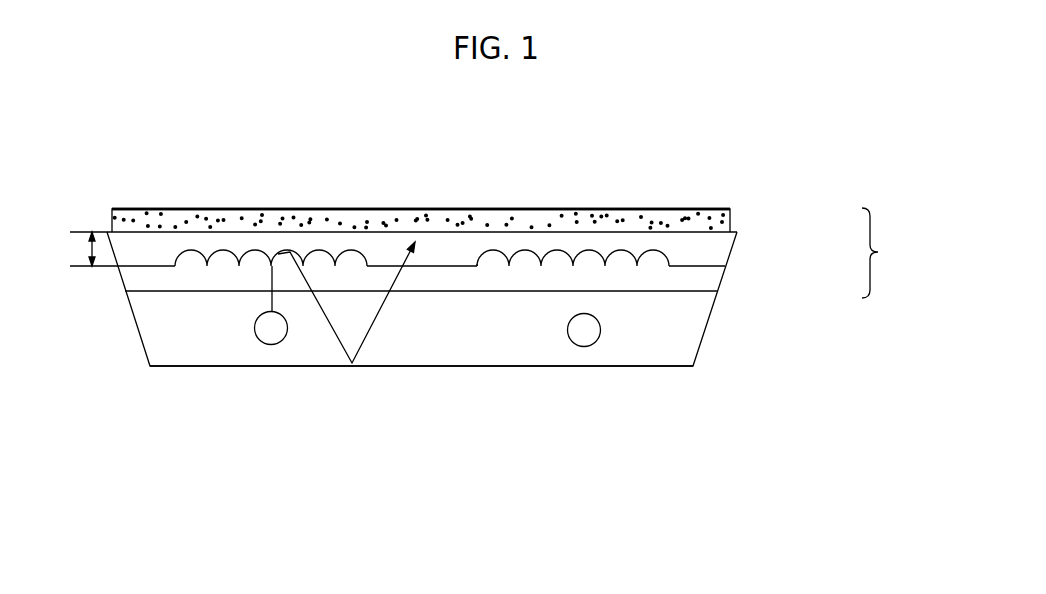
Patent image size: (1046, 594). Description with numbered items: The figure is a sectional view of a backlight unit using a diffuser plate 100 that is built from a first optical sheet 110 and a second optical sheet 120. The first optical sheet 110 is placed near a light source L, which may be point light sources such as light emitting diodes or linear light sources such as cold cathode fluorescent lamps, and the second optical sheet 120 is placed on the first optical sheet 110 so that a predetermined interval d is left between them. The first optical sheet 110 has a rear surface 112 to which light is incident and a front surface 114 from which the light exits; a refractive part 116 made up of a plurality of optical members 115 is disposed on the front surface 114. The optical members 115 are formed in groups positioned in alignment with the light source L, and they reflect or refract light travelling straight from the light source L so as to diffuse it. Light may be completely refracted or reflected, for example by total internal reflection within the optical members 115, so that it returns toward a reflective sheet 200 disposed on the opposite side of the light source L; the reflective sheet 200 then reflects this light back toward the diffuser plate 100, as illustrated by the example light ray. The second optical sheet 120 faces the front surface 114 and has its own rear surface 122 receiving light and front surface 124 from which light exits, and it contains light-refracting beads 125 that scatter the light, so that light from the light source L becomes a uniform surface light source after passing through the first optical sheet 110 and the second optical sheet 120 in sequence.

The diffuser plate 100 is at (896, 253).
The first optical sheet 110 is at (712, 282).
The rear surface 112 is at (677, 293).
The front surface 114 is at (445, 263).
The optical members 115 is at (488, 262).
The refractive part 116 is at (663, 250).
The second optical sheet 120 is at (730, 218).
The rear surface 122 is at (168, 232).
The front surface 124 is at (668, 210).
The light-refracting beads 125 is at (297, 218).
The reflective sheet 200 is at (668, 367).
The light source L is at (583, 332).
The predetermined interval d is at (79, 249).